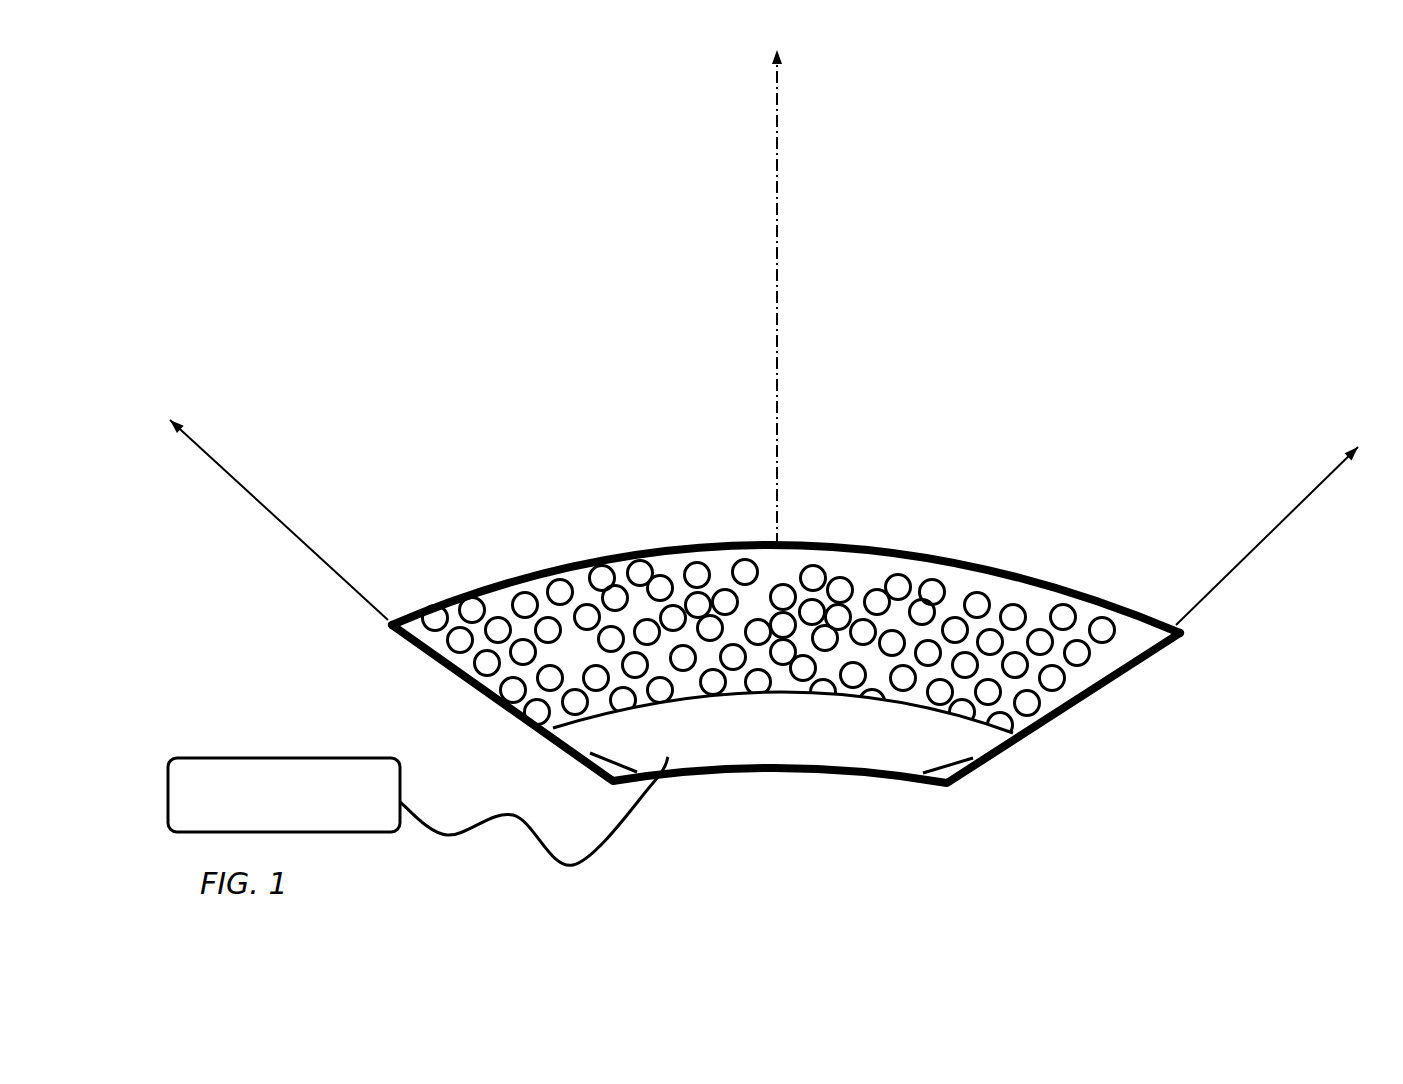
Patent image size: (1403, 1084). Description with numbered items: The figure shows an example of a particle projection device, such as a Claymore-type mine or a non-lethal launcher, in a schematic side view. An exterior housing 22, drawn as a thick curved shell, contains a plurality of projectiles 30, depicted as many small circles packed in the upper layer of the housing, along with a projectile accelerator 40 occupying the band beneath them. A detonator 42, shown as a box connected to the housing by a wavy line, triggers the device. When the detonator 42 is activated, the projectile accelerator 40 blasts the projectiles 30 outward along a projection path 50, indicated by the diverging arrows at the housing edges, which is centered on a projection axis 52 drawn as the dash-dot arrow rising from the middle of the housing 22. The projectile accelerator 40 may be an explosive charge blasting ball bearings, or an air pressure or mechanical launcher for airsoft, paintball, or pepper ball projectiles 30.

The exterior housing 22 is at (1150, 653).
The projectiles 30 is at (853, 675).
The projectile accelerator 40 is at (783, 720).
The detonator 42 is at (418, 811).
The projection path 50 is at (1257, 553).
The projection axis 52 is at (777, 224).